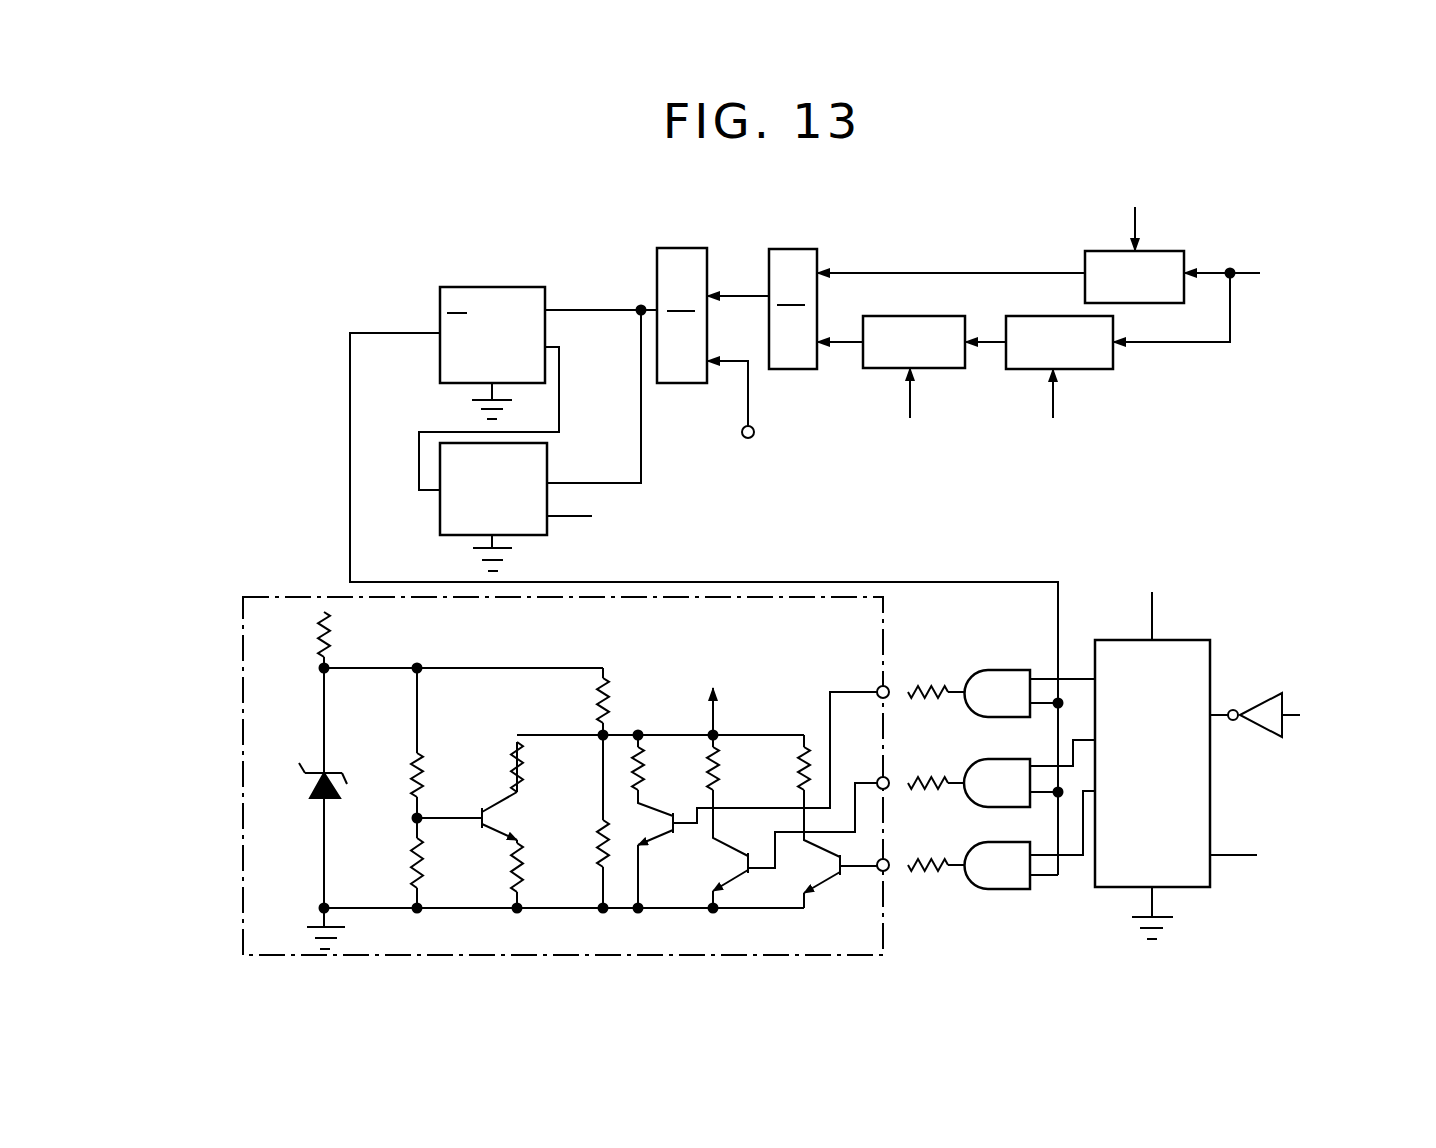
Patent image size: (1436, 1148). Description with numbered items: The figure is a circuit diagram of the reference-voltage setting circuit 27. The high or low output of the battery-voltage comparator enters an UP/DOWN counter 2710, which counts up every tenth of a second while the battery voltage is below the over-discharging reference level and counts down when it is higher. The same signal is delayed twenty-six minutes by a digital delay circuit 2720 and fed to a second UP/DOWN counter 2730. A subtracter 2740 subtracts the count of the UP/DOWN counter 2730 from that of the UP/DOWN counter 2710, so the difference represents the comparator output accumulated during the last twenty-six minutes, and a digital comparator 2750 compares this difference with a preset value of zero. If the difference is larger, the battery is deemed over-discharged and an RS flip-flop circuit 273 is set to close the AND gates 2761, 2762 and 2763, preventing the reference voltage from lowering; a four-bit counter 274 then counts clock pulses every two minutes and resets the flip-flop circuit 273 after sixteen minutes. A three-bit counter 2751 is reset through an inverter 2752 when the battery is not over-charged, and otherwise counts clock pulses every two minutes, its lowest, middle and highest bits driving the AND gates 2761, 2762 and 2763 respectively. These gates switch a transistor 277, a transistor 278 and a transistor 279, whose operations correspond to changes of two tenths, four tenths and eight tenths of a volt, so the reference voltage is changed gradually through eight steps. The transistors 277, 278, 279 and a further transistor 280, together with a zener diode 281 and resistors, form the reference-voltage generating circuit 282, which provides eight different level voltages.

The RS flip-flop circuit 273 is at (477, 295).
The 4-bit counter 274 is at (535, 457).
The digital comparator 2750 is at (673, 257).
The subtracter 2740 is at (793, 257).
The UP/DOWN counter 2730 is at (913, 315).
The digital delay circuit 2720 is at (1047, 315).
The UP/DOWN counter 2710 is at (1166, 251).
The reference-voltage setting circuit 27 is at (1223, 358).
The 3-bit counter 2751 is at (1198, 647).
The inverter 2752 is at (1260, 697).
The AND gate 2761 is at (998, 675).
The AND gate 2762 is at (975, 772).
The AND gate 2763 is at (982, 857).
The transistor 277 is at (667, 838).
The transistor 278 is at (740, 873).
The transistor 279 is at (832, 878).
The transistor 280 is at (497, 822).
The zener diode 281 is at (345, 782).
The reference-voltage generating circuit 282 is at (885, 933).